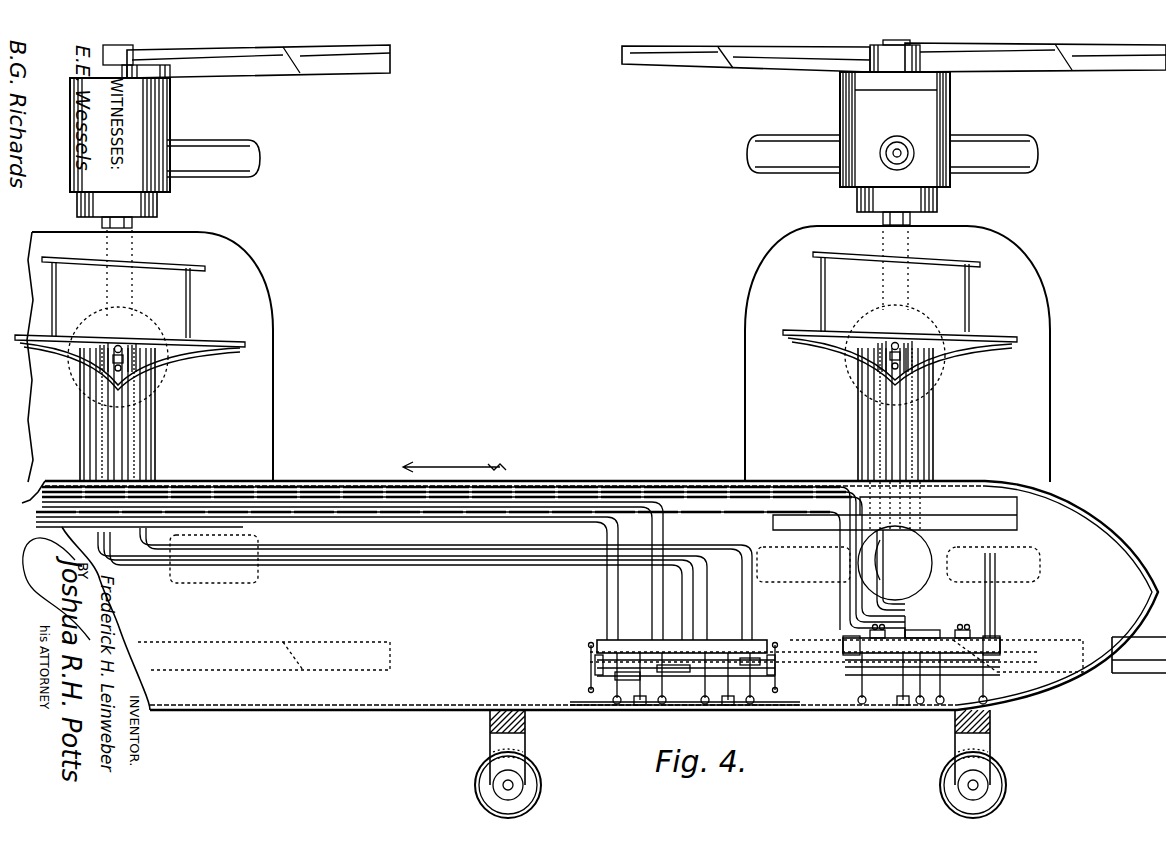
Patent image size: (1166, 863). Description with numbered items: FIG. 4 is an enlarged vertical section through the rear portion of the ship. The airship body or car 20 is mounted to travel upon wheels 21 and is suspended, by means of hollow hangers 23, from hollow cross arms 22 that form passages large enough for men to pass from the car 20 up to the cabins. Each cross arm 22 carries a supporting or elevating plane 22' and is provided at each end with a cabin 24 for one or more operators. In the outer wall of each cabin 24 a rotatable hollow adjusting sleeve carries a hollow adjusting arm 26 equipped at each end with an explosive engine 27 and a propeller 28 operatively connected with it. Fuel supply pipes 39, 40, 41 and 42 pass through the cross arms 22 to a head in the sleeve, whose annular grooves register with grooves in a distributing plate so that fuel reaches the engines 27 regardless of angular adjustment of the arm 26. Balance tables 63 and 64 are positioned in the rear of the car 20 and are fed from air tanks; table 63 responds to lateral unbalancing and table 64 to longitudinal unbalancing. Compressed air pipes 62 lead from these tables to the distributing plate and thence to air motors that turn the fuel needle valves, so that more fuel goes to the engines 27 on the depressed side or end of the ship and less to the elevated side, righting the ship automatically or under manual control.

The airship body or car 20 is at (352, 481).
The wheels 21 is at (542, 800).
The hollow cross arms 22 is at (516, 356).
The supporting or elevating plane 22' is at (543, 281).
The hollow hangers 23 is at (150, 433).
The cabin 24 is at (200, 248).
The hollow adjusting arm 26 is at (134, 222).
The explosive engine 27 is at (1045, 540).
The propeller 28 is at (283, 67).
The fuel supply pipe 39 is at (100, 365).
The fuel supply pipe 40 is at (140, 362).
The fuel supply pipe 41 is at (110, 375).
The fuel supply pipe 42 is at (125, 345).
The compressed air pipes 62 is at (565, 486).
The balance table 63 is at (755, 650).
The balance table 64 is at (1002, 648).